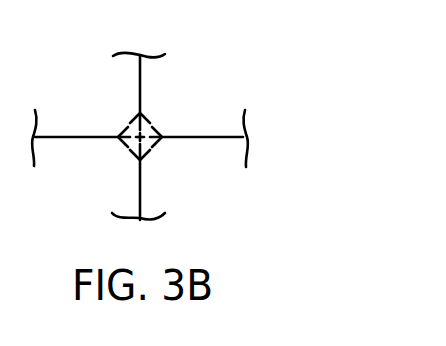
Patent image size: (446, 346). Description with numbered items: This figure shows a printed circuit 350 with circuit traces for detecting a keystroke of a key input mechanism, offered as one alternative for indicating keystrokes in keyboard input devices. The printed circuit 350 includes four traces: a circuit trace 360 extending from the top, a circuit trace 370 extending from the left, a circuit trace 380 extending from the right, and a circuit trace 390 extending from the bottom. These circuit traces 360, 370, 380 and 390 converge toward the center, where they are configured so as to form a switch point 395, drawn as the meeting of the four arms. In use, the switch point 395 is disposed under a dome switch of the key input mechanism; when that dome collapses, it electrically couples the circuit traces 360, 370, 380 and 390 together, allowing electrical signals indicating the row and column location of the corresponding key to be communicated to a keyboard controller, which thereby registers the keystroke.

The printed circuit 350 is at (234, 49).
The circuit trace 360 is at (139, 89).
The circuit trace 370 is at (83, 137).
The circuit trace 380 is at (212, 137).
The circuit trace 390 is at (140, 186).
The switch point 395 is at (152, 119).